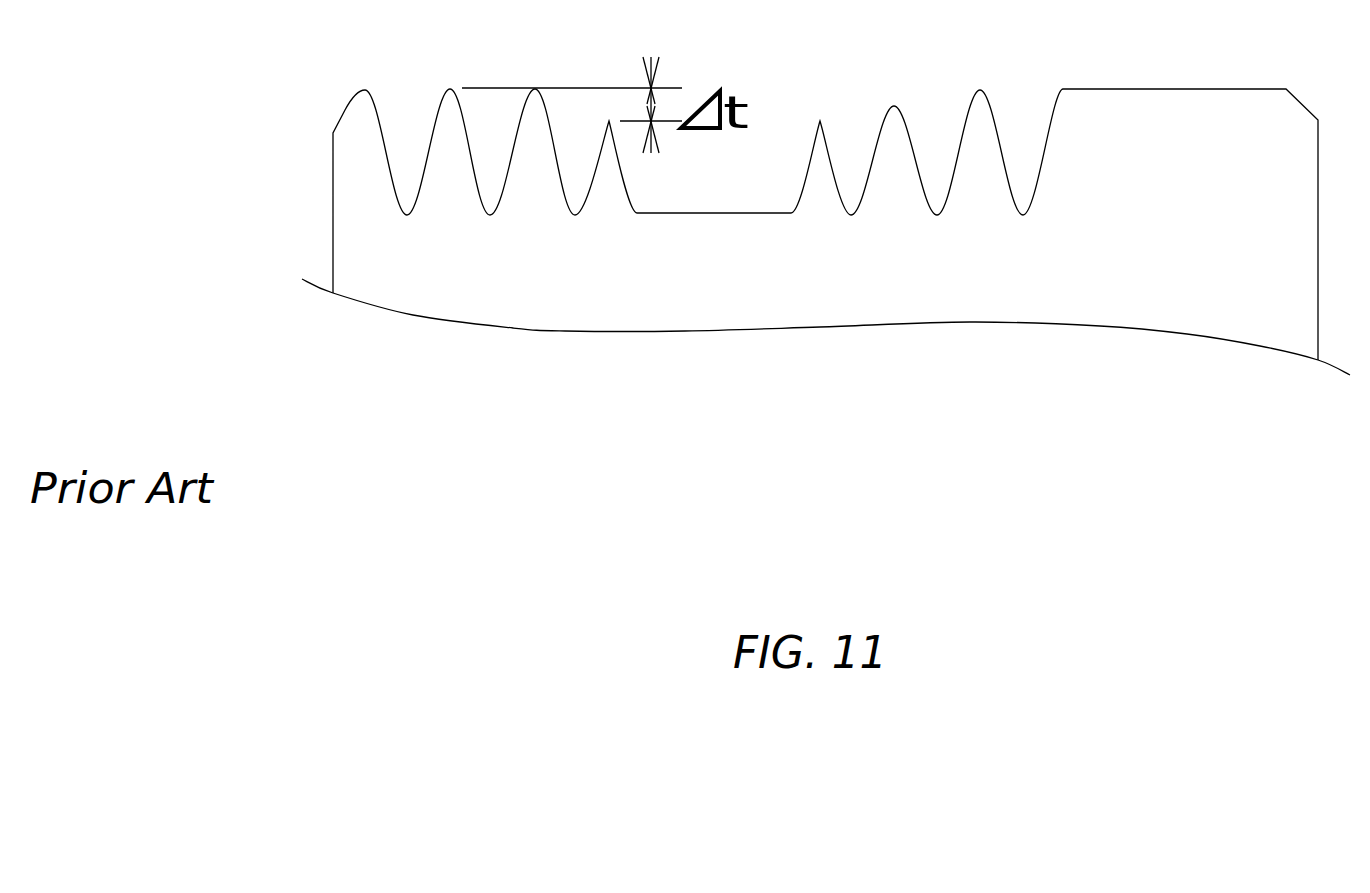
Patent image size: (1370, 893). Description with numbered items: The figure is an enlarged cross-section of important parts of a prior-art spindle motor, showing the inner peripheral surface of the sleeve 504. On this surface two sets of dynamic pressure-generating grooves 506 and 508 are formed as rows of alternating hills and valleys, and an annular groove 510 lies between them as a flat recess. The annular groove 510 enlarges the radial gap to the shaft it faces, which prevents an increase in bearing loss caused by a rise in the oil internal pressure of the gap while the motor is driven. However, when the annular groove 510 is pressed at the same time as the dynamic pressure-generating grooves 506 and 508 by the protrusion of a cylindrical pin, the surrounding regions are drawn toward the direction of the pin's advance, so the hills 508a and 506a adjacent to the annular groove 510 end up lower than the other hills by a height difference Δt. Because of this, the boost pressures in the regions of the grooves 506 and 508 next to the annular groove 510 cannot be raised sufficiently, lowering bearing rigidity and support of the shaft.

The sleeve 504 is at (1001, 249).
The dynamic pressure-generating grooves 506 is at (1001, 90).
The hill 506a is at (820, 125).
The dynamic pressure-generating grooves 508 is at (407, 172).
The hill 508a is at (609, 125).
The annular groove 510 is at (683, 185).